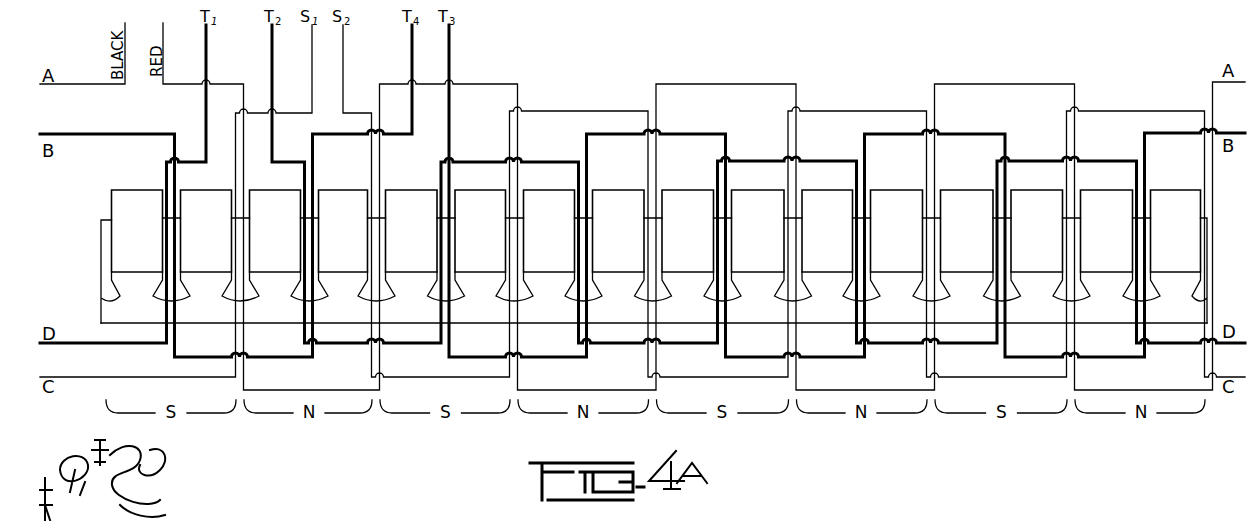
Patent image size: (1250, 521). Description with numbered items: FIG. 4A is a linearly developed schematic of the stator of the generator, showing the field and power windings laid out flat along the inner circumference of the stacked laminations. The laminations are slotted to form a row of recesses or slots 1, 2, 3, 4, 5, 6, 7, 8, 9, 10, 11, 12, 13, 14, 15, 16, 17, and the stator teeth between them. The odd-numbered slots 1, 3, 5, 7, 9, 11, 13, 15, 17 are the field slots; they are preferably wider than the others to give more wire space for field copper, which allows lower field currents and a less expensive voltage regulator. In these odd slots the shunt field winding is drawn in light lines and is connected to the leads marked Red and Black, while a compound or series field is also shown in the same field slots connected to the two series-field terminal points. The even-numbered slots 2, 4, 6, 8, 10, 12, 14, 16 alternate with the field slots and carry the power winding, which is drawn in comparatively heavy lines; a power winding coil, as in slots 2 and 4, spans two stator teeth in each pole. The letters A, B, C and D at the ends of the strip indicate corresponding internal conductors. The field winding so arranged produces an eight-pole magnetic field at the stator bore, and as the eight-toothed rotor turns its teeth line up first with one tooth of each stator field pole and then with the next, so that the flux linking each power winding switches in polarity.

The slot 1 is at (110, 271).
The slot 2 is at (171, 259).
The slot 3 is at (240, 259).
The slot 4 is at (309, 259).
The slot 5 is at (376, 259).
The slot 6 is at (446, 259).
The slot 7 is at (514, 259).
The slot 8 is at (583, 259).
The slot 9 is at (653, 259).
The slot 10 is at (723, 259).
The slot 11 is at (794, 259).
The slot 12 is at (862, 259).
The slot 13 is at (932, 259).
The slot 14 is at (1003, 259).
The slot 15 is at (1072, 259).
The slot 16 is at (1142, 259).
The slot 17 is at (1198, 270).